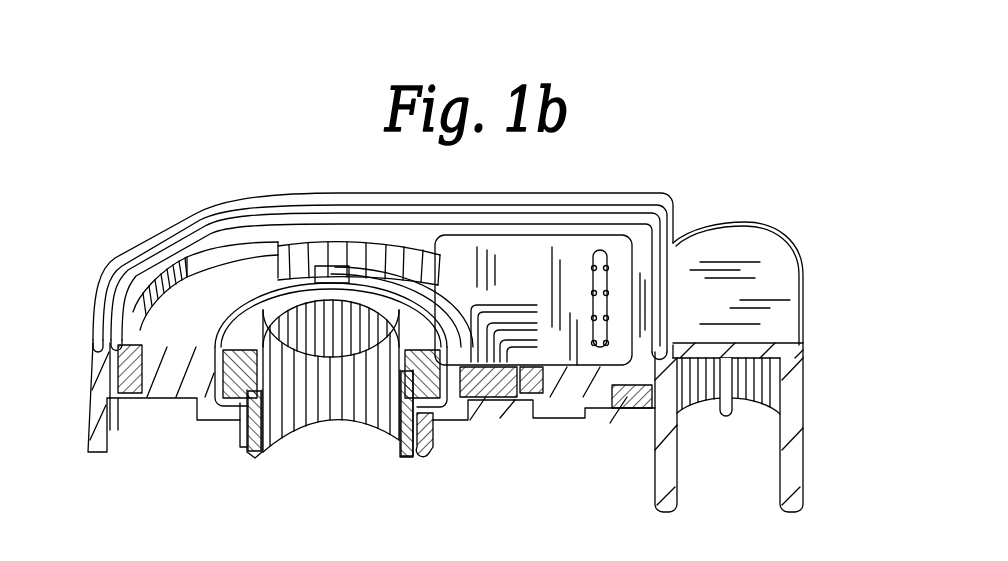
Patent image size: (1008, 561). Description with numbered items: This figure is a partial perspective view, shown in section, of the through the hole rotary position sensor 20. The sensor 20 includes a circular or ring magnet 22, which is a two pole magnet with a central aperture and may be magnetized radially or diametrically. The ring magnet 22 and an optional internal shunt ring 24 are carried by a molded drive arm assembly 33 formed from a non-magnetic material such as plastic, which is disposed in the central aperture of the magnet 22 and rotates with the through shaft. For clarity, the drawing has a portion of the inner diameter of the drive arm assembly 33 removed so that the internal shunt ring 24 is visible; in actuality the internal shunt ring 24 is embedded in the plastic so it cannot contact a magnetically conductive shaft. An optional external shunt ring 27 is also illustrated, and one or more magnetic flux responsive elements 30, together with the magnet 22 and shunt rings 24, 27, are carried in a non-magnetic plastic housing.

The through the hole rotary position sensor 20 is at (715, 188).
The ring magnet 22 is at (433, 418).
The internal shunt ring 24 is at (385, 427).
The external shunt ring 27 is at (625, 398).
The magnetic flux responsive element 30 is at (527, 370).
The drive arm assembly 33 is at (253, 456).